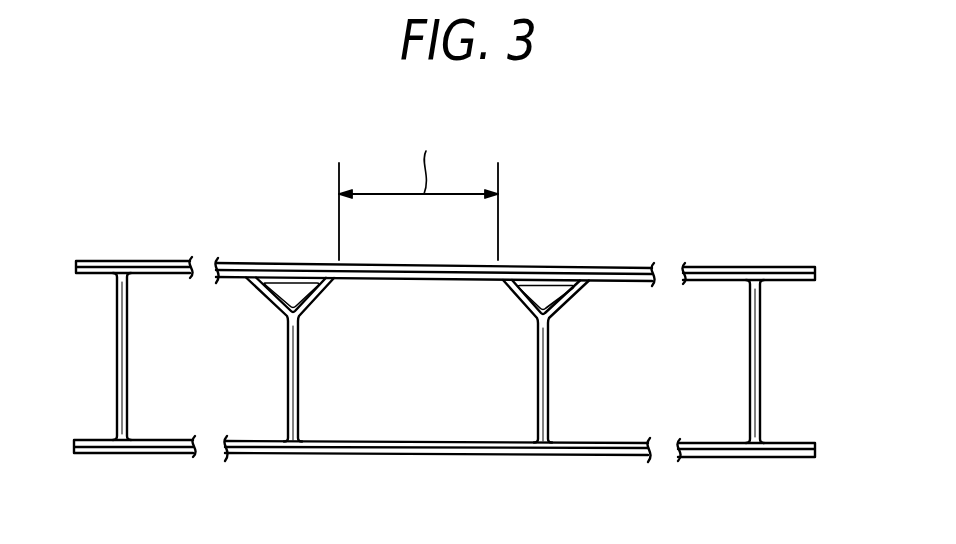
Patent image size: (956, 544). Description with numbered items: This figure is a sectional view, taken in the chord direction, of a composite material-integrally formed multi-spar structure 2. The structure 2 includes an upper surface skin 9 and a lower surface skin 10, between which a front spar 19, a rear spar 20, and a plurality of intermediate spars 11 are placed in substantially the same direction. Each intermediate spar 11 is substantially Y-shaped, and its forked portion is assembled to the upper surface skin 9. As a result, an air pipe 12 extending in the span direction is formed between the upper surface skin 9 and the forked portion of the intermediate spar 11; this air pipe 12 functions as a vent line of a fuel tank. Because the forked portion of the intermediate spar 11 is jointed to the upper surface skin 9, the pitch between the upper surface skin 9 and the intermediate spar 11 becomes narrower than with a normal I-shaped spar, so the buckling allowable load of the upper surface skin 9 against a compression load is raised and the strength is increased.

The composite material-integrally formed multi-spar structure 2 is at (672, 232).
The upper surface skin 9 is at (622, 266).
The lower surface skin 10 is at (592, 456).
The intermediate spar 11 is at (298, 387).
The air pipe 12 is at (296, 291).
The front spar 19 is at (117, 380).
The rear spar 20 is at (760, 377).